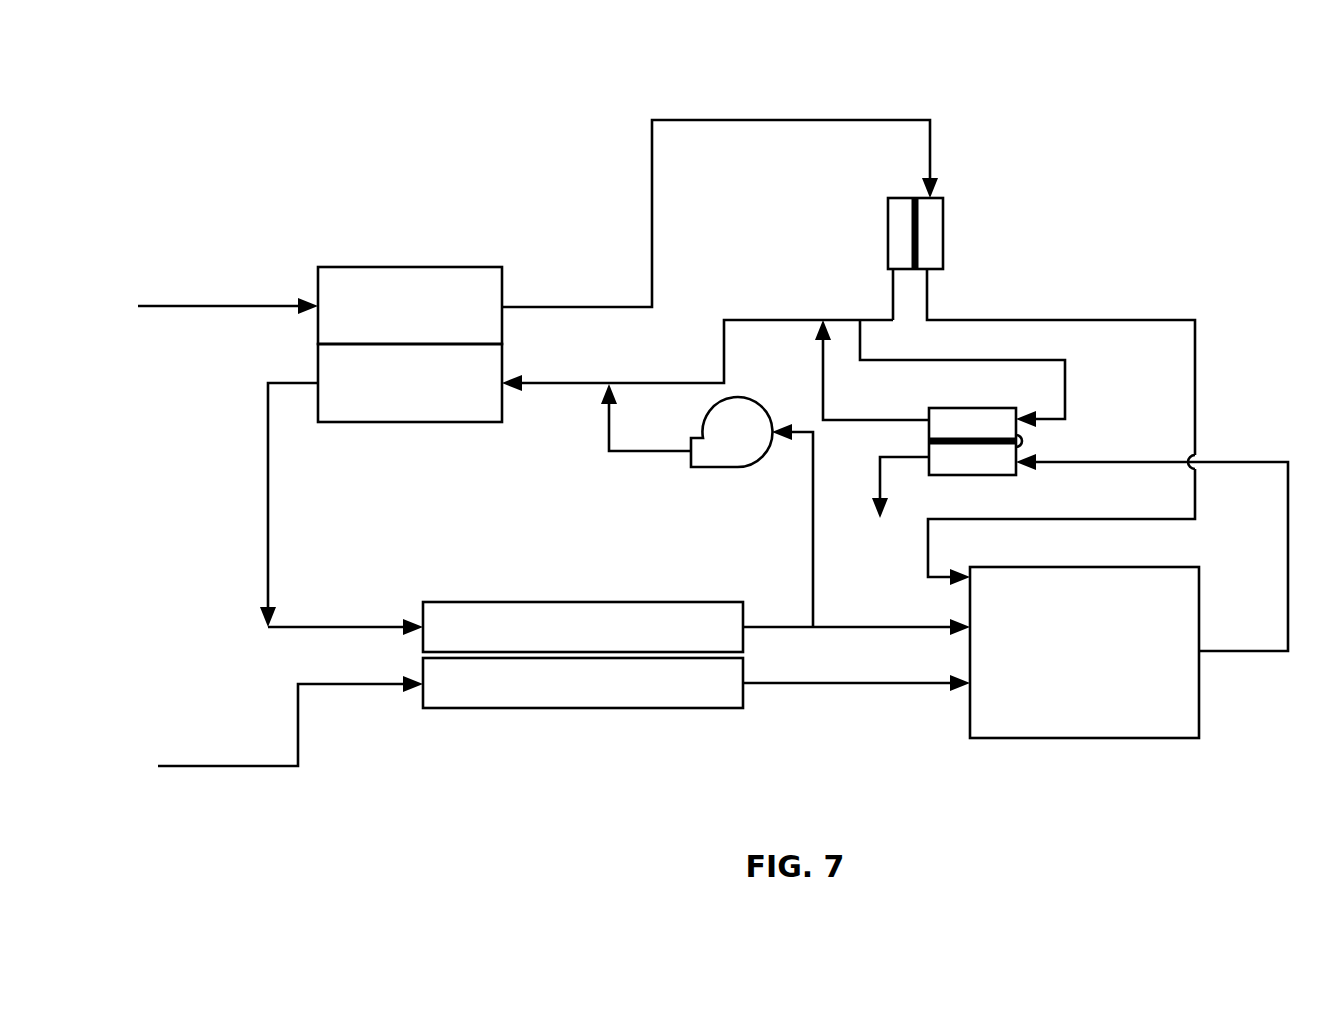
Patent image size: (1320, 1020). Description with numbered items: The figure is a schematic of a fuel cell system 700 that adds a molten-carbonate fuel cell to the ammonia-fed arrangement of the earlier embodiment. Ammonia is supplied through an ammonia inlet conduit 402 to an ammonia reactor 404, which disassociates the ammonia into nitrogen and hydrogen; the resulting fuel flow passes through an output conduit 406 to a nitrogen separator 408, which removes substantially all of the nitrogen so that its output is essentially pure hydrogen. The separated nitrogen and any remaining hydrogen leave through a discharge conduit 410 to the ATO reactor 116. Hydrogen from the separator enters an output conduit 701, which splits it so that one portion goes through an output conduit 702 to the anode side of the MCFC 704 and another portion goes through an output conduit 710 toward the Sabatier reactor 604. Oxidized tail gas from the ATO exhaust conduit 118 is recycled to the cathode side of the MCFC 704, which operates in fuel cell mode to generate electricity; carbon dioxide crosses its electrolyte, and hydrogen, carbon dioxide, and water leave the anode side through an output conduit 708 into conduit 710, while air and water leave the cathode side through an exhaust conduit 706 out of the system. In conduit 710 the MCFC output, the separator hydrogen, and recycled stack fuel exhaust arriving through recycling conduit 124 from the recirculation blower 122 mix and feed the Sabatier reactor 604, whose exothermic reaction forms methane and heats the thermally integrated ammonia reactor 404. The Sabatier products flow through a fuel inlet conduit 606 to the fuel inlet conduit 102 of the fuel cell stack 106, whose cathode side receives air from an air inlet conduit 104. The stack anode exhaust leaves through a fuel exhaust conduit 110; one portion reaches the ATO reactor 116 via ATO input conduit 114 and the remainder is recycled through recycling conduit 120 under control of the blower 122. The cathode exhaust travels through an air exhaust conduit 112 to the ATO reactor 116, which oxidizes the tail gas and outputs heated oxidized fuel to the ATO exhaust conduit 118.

The fuel cell system 700 is at (203, 70).
The ammonia inlet conduit 402 is at (215, 307).
The ammonia reactor 404 is at (411, 267).
The Sabatier reactor 604 is at (409, 423).
The output conduit 406 is at (575, 306).
The nitrogen separator 408 is at (945, 221).
The output conduit 701 is at (893, 300).
The output conduit 710 is at (755, 319).
The discharge conduit 410 is at (928, 289).
The output conduit 708 is at (825, 402).
The output conduit 702 is at (1066, 387).
The molten-carbonate fuel cell 704 is at (970, 418).
The exhaust conduit 706 is at (880, 477).
The recirculation blower 122 is at (758, 412).
The recycling conduit 124 is at (642, 451).
The recycling conduit 120 is at (813, 557).
The fuel inlet conduit 606 is at (268, 493).
The fuel inlet conduit 102 is at (356, 624).
The fuel cell stack 106 is at (459, 602).
The air inlet conduit 104 is at (299, 750).
The fuel exhaust conduit 110 is at (780, 627).
The ATO input conduit 114 is at (922, 627).
The air exhaust conduit 112 is at (820, 684).
The ATO reactor 116 is at (1173, 567).
The ATO exhaust conduit 118 is at (1271, 651).